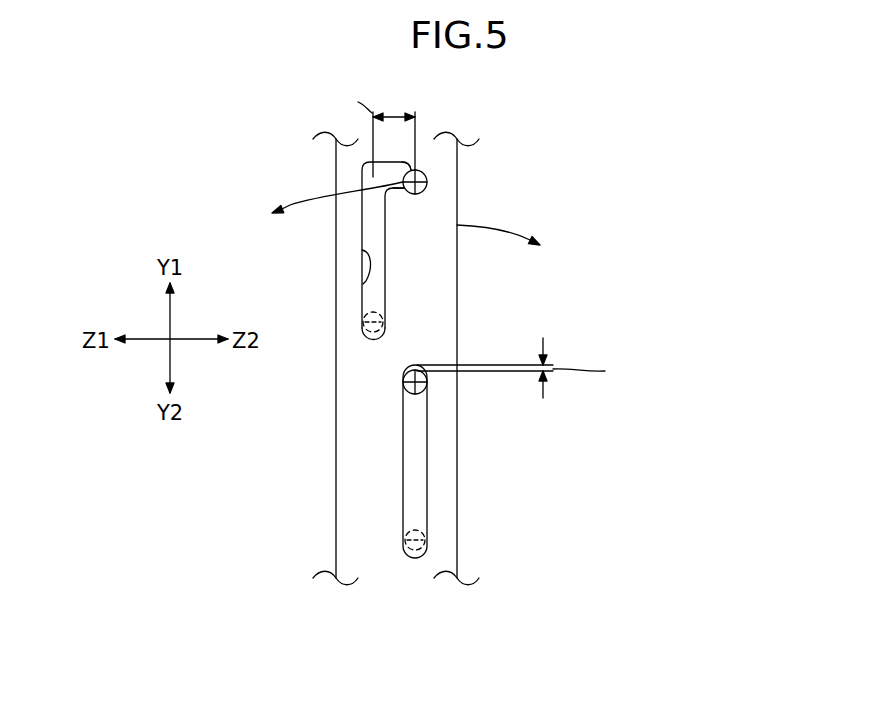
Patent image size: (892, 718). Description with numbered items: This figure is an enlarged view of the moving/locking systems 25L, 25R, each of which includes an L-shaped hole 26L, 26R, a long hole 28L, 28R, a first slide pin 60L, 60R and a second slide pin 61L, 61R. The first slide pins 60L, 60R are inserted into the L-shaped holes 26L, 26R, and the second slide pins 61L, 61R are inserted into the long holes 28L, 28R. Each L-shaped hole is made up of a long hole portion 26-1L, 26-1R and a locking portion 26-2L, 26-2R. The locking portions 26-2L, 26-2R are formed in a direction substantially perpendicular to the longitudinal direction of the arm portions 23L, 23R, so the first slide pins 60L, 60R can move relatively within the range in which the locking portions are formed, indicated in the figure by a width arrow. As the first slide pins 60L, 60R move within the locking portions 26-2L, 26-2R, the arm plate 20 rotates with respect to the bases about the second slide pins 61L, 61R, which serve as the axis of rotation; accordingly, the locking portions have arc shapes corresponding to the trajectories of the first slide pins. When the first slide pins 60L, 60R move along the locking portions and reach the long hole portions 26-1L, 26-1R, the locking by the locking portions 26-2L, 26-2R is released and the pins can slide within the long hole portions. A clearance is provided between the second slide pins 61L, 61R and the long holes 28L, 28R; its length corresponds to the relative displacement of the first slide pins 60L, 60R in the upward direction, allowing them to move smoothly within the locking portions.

The arm plate 20 is at (280, 528).
The arm portion 23L is at (503, 358).
The arm portion 23R is at (450, 293).
The moving/locking system 25L is at (494, 338).
The moving/locking system 25R is at (494, 338).
The L-shaped hole 26L is at (499, 318).
The L-shaped hole 26R is at (499, 318).
The long hole portion 26-1L is at (312, 362).
The long hole portion 26-1R is at (365, 281).
The locking portion 26-2L is at (569, 186).
The locking portion 26-2R is at (425, 190).
The long hole 28L is at (549, 461).
The long hole 28R is at (418, 472).
The first slide pin 60L is at (528, 239).
The first slide pin 60R is at (423, 175).
The second slide pin 61L is at (549, 461).
The second slide pin 61R is at (427, 388).